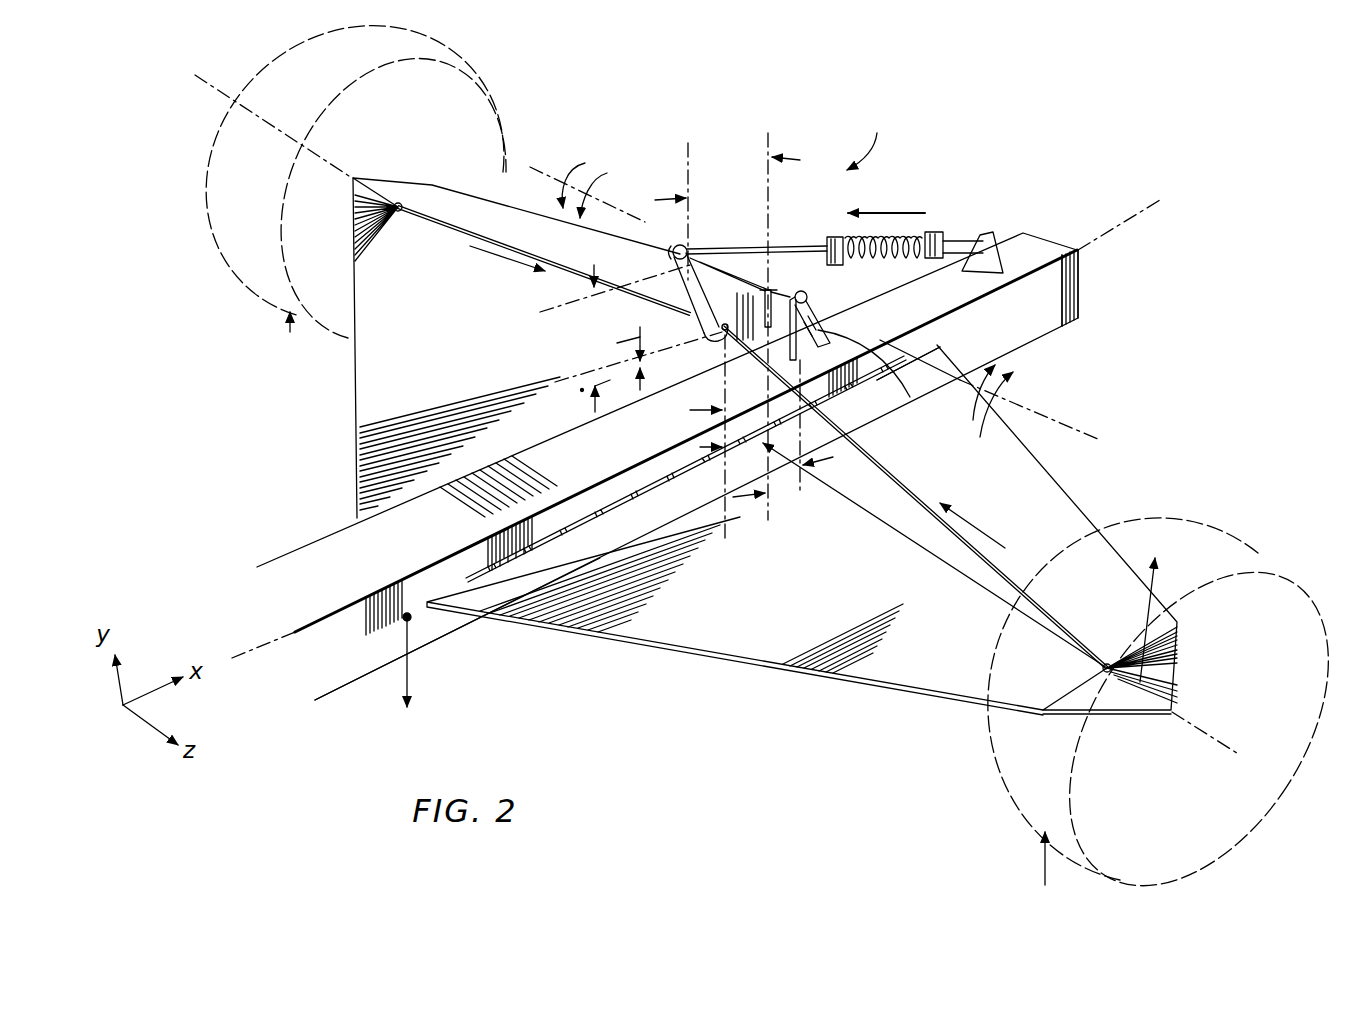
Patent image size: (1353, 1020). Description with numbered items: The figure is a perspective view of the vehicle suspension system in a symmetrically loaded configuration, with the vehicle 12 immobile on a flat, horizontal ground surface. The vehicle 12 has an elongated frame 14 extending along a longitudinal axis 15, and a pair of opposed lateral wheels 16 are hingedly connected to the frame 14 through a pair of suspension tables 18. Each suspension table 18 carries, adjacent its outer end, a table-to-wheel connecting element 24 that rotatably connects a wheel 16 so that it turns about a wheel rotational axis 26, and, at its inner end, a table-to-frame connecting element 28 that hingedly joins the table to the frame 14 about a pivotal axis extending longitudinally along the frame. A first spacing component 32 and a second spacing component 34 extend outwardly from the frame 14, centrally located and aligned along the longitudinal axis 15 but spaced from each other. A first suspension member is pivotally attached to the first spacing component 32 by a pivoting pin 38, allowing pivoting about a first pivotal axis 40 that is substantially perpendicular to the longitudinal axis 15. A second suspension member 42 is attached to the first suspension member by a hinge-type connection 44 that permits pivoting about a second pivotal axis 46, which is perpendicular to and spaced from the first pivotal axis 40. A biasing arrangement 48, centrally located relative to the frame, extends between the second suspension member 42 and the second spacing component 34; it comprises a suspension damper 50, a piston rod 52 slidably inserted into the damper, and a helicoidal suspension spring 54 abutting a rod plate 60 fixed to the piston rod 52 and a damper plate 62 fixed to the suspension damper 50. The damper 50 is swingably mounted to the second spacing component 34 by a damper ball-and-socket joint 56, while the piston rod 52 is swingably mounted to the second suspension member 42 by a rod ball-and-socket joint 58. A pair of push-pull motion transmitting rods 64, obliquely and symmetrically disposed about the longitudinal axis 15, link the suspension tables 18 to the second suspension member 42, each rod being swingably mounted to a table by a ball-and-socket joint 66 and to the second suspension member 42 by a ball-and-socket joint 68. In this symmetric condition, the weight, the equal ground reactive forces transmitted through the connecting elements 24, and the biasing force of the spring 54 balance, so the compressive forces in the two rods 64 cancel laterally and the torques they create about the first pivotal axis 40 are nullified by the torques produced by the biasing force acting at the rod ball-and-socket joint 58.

The vehicle 12 is at (338, 713).
The frame 14 is at (364, 656).
The longitudinal axis 15 is at (1133, 212).
The lateral wheels 16 is at (478, 78).
The suspension tables 18 is at (368, 408).
The table-to-wheel connecting element 24 is at (357, 210).
The wheel rotational axis 26 is at (212, 88).
The table-to-frame connecting element 28 is at (655, 495).
The first spacing component 32 is at (878, 382).
The second spacing component 34 is at (1077, 252).
The pivoting pin 38 is at (810, 295).
The first pivotal axis 40 is at (1060, 428).
The second suspension member 42 is at (675, 276).
The hinge-type connection 44 is at (770, 288).
The second pivotal axis 46 is at (772, 152).
The biasing arrangement 48 is at (872, 138).
The suspension damper 50 is at (975, 240).
The piston rod 52 is at (752, 247).
The helicoidal suspension spring 54 is at (918, 240).
The damper ball-and-socket joint 56 is at (1003, 243).
The rod ball-and-socket joint 58 is at (687, 245).
The rod plate 60 is at (835, 237).
The damper plate 62 is at (940, 234).
The motion transmitting rods 64 is at (452, 222).
The ball-and-socket joint 66 is at (402, 203).
The ball-and-socket joint 68 is at (700, 316).